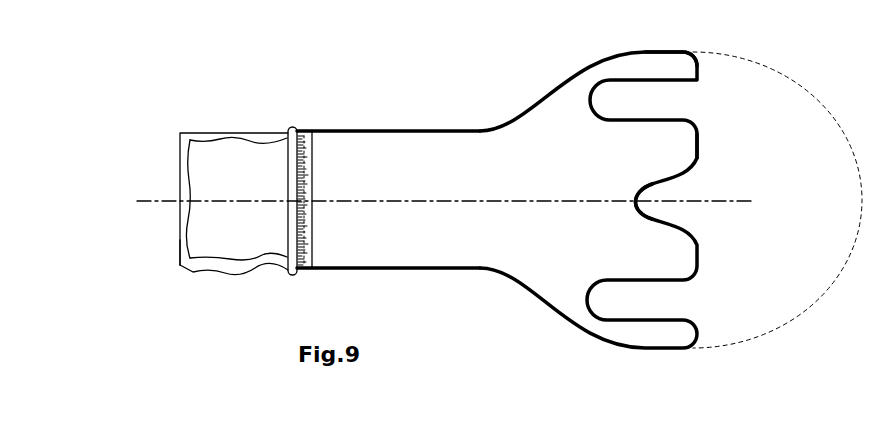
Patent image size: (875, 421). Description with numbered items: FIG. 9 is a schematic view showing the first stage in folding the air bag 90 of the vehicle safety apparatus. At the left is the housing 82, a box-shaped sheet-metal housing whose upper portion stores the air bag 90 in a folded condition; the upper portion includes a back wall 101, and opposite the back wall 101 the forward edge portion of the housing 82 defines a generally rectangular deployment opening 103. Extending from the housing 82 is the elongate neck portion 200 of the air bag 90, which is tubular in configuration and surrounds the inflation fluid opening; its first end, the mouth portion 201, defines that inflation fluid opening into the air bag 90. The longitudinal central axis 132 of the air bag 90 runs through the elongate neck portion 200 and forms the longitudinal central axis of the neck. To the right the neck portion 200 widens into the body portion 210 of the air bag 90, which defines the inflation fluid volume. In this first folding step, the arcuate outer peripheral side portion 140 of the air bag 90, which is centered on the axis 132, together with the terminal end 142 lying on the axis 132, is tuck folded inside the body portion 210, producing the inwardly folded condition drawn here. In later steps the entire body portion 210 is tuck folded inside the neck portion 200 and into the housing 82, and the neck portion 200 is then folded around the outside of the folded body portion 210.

The housing 82 is at (227, 133).
The air bag 90 is at (503, 85).
The back wall 101 is at (180, 248).
The deployment opening 103 is at (288, 242).
The longitudinal central axis 132 is at (386, 200).
The arcuate outer peripheral side portion 140 is at (700, 157).
The terminal end 142 is at (630, 203).
The elongate neck portion 200 is at (410, 131).
The mouth portion 201 is at (296, 128).
The body portion 210 is at (681, 50).